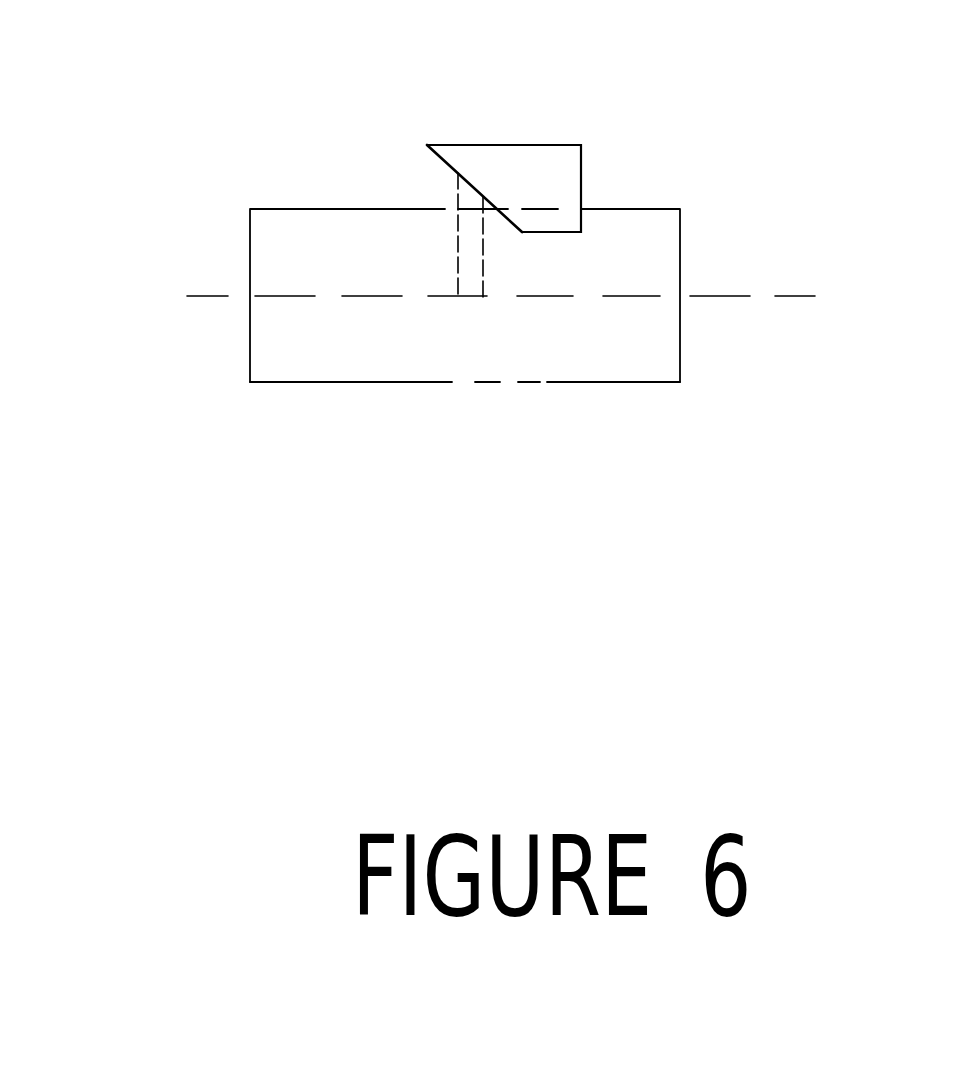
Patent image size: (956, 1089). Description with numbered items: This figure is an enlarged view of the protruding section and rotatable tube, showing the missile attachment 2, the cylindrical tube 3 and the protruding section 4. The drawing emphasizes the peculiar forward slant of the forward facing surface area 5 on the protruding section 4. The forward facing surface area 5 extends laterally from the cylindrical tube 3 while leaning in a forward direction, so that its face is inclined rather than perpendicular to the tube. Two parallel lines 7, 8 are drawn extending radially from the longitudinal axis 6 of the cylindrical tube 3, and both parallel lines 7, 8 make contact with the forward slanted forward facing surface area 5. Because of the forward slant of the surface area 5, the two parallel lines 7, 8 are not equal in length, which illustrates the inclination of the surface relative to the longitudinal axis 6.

The missile attachment 2 is at (319, 336).
The cylindrical tube 3 is at (578, 367).
The protruding section 4 is at (538, 182).
The forward facing surface area 5 is at (432, 153).
The longitudinal axis 6 is at (605, 303).
The parallel line 7 is at (445, 183).
The parallel line 8 is at (495, 267).